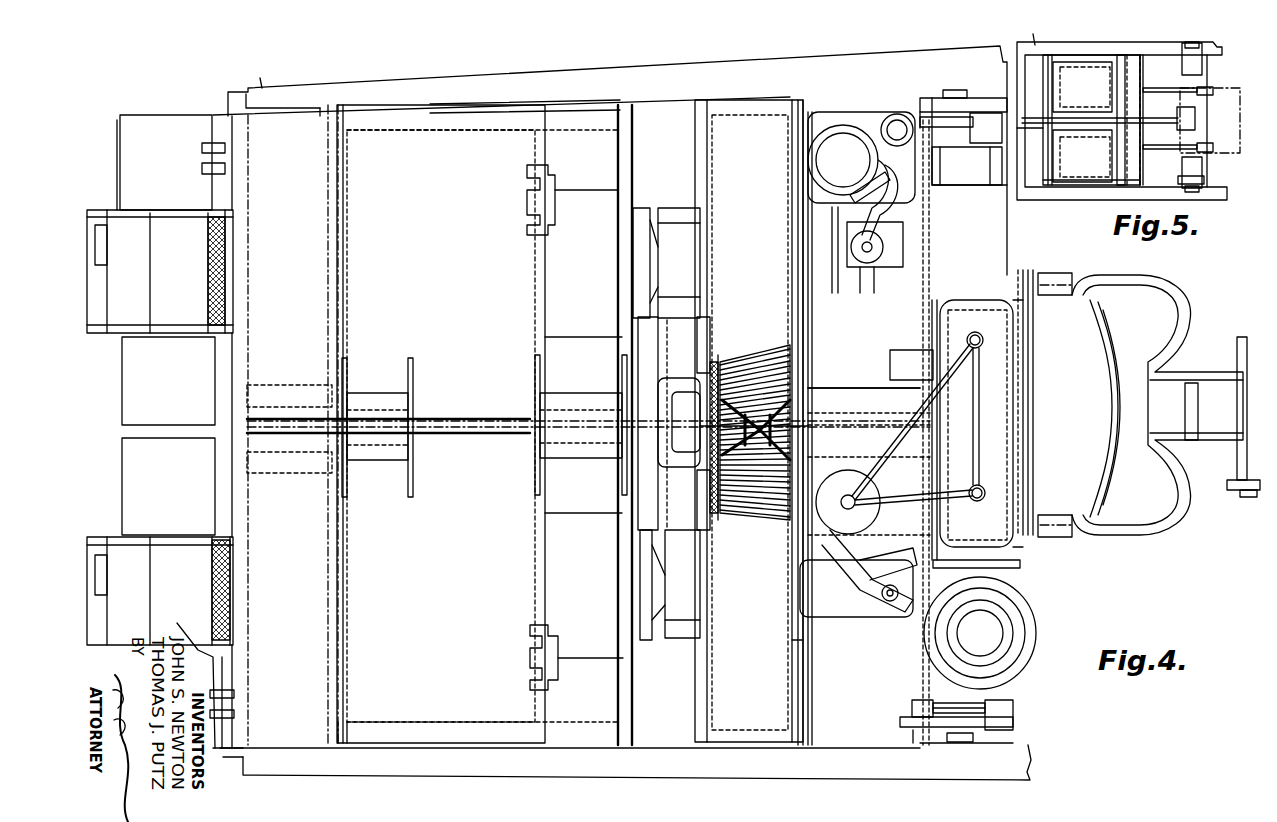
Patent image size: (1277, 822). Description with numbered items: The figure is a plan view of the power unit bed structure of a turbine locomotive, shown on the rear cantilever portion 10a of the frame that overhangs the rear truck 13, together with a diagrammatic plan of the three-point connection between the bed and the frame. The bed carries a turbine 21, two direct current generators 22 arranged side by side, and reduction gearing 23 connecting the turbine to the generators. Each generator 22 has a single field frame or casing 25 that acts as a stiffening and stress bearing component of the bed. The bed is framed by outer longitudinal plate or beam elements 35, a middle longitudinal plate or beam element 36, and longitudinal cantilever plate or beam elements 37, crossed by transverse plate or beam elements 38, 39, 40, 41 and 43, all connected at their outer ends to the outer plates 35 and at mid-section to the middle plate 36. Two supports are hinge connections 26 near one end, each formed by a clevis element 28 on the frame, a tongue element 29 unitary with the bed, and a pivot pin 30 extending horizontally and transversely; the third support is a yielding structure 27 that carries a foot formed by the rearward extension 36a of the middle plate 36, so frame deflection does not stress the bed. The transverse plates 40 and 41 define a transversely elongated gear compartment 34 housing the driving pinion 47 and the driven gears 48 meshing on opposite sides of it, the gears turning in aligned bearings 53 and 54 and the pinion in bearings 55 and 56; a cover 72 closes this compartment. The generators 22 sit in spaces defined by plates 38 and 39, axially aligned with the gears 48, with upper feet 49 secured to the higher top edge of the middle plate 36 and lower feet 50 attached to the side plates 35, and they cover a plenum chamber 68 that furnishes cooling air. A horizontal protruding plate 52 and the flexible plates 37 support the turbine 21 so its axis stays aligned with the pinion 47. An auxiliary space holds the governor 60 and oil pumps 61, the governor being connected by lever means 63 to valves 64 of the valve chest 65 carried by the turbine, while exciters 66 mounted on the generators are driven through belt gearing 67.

In FIG. 4, the rear cantilever portion of the frame 10a is at (265, 69).
In FIG. 5, the rear cantilever portion of the frame 10a is at (1042, 28).
In FIG. 4, the rear truck 13 is at (446, 775).
In FIG. 5, the rear truck 13 is at (1028, 165).
In FIG. 4, the turbine 21 is at (1138, 305).
In FIG. 4, the direct current generators 22 is at (394, 266).
In FIG. 5, the direct current generators 22 is at (1075, 58).
In FIG. 4, the reduction gearing 23 is at (724, 533).
In FIG. 4, the field frame or casing 25 is at (312, 106).
In FIG. 4, the hinge connections 26 is at (982, 108).
In FIG. 4, the yielding support structure 27 is at (248, 420).
In FIG. 4, the clevis elements 28 is at (995, 110).
In FIG. 5, the clevis elements 28 is at (1185, 65).
In FIG. 4, the tongue elements 29 is at (935, 115).
In FIG. 5, the tongue elements 29 is at (1202, 176).
In FIG. 4, the pivot pins 30 is at (946, 90).
In FIG. 5, the pivot pins 30 is at (1192, 42).
In FIG. 4, the gear compartment 34 is at (720, 362).
In FIG. 5, the gear compartment 34 is at (1028, 125).
In FIG. 4, the outer longitudinal plate or beam elements 35 is at (425, 140).
In FIG. 5, the outer longitudinal plate or beam elements 35 is at (1073, 185).
In FIG. 4, the middle longitudinal plate or beam element 36 is at (462, 435).
In FIG. 5, the middle longitudinal plate or beam element 36 is at (1083, 118).
In FIG. 4, the rearward extension 36a is at (266, 418).
In FIG. 4, the longitudinal cantilever plate or beam elements 37 is at (1045, 285).
In FIG. 5, the longitudinal cantilever plate or beam elements 37 is at (1198, 86).
In FIG. 4, the transverse plate or beam element 38 is at (345, 545).
In FIG. 5, the transverse plate or beam element 38 is at (1048, 98).
In FIG. 4, the transverse plate or beam element 39 is at (667, 512).
In FIG. 4, the transverse plate or beam element 40 is at (710, 495).
In FIG. 4, the transverse plate or beam element 41 is at (795, 651).
In FIG. 4, the transverse plate or beam element 43 is at (928, 208).
In FIG. 4, the driving pinion 47 is at (782, 408).
In FIG. 5, the driving pinion 47 is at (1143, 108).
In FIG. 4, the driven gears 48 is at (760, 345).
In FIG. 5, the driven gears 48 is at (1128, 55).
In FIG. 4, the upper feet 49 is at (378, 393).
In FIG. 4, the lower feet 50 is at (470, 100).
In FIG. 4, the horizontal protruding plate 52 is at (1030, 388).
In FIG. 5, the horizontal protruding plate 52 is at (1197, 117).
In FIG. 4, the bearings for the gears 53 is at (810, 223).
In FIG. 4, the bearings for the gears 54 is at (678, 222).
In FIG. 4, the bearings for the pinion 55 is at (855, 388).
In FIG. 4, the bearings for the pinion 56 is at (682, 445).
In FIG. 4, the governor 60 is at (850, 478).
In FIG. 4, the oil pumps 61 is at (844, 135).
In FIG. 4, the lever means 63 is at (902, 500).
In FIG. 4, the valves 64 is at (986, 335).
In FIG. 4, the valve chest 65 is at (1000, 355).
In FIG. 4, the exciters 66 is at (172, 228).
In FIG. 4, the belt gearing 67 is at (112, 285).
In FIG. 4, the plenum chamber 68 is at (388, 722).
In FIG. 4, the cover 72 is at (747, 125).